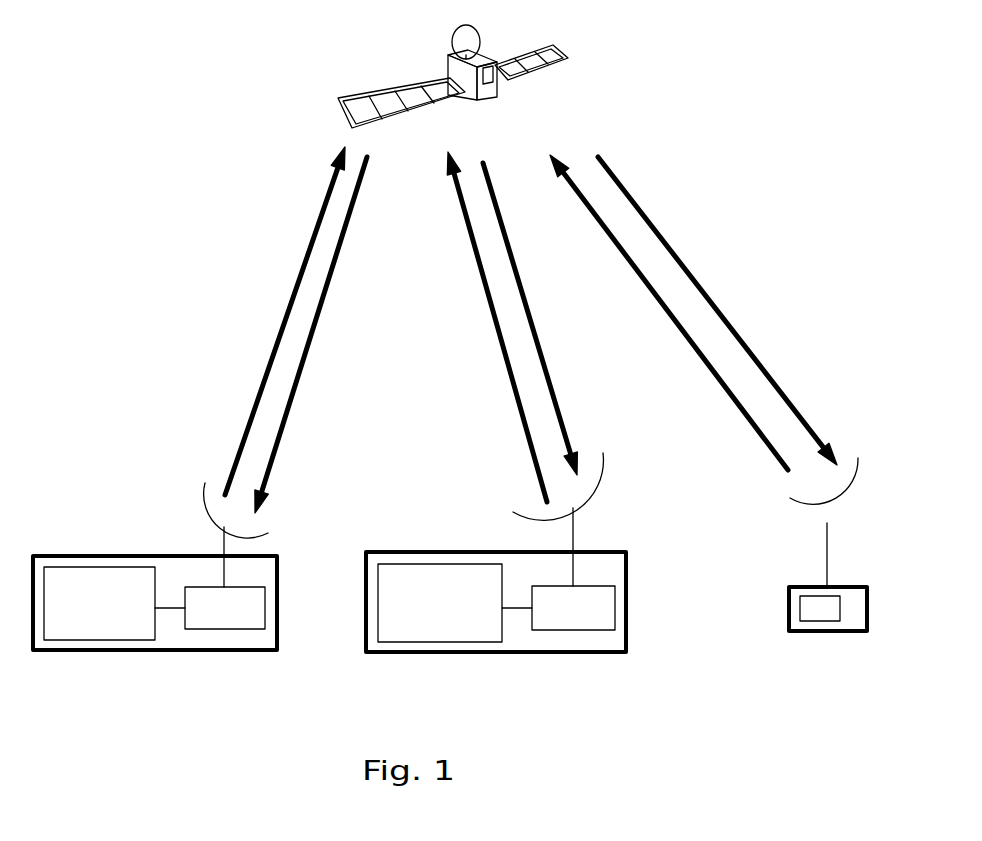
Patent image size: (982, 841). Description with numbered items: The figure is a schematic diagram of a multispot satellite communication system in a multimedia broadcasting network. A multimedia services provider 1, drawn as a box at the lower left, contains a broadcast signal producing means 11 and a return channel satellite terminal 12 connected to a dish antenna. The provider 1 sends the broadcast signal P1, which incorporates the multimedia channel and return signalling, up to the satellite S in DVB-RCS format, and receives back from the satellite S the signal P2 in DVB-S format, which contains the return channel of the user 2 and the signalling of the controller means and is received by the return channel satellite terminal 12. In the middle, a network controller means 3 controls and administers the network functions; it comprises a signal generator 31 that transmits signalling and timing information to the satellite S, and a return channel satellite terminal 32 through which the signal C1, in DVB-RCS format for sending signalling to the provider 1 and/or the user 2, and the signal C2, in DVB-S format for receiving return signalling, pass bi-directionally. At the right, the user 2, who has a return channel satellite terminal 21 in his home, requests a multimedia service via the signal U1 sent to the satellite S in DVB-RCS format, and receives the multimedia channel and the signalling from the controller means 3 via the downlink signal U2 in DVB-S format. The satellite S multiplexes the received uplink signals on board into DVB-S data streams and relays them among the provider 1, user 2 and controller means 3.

The satellite S is at (420, 60).
The broadcast signal P1 is at (248, 344).
The signal P2 is at (325, 340).
The signal C1 is at (469, 281).
The signal C2 is at (551, 313).
The signal U1 is at (685, 365).
The downlink signal from satellite to user terminal 2 U2 is at (673, 224).
The multimedia services provider 1 is at (195, 650).
The broadcast signal producing means 11 is at (87, 625).
The return channel satellite terminal 12 is at (239, 612).
The user 2 is at (780, 569).
The transceiver of user terminal 21 is at (821, 635).
The network controller means 3 is at (589, 664).
The signal generator 31 is at (403, 612).
The return channel satellite terminal 32 is at (578, 604).